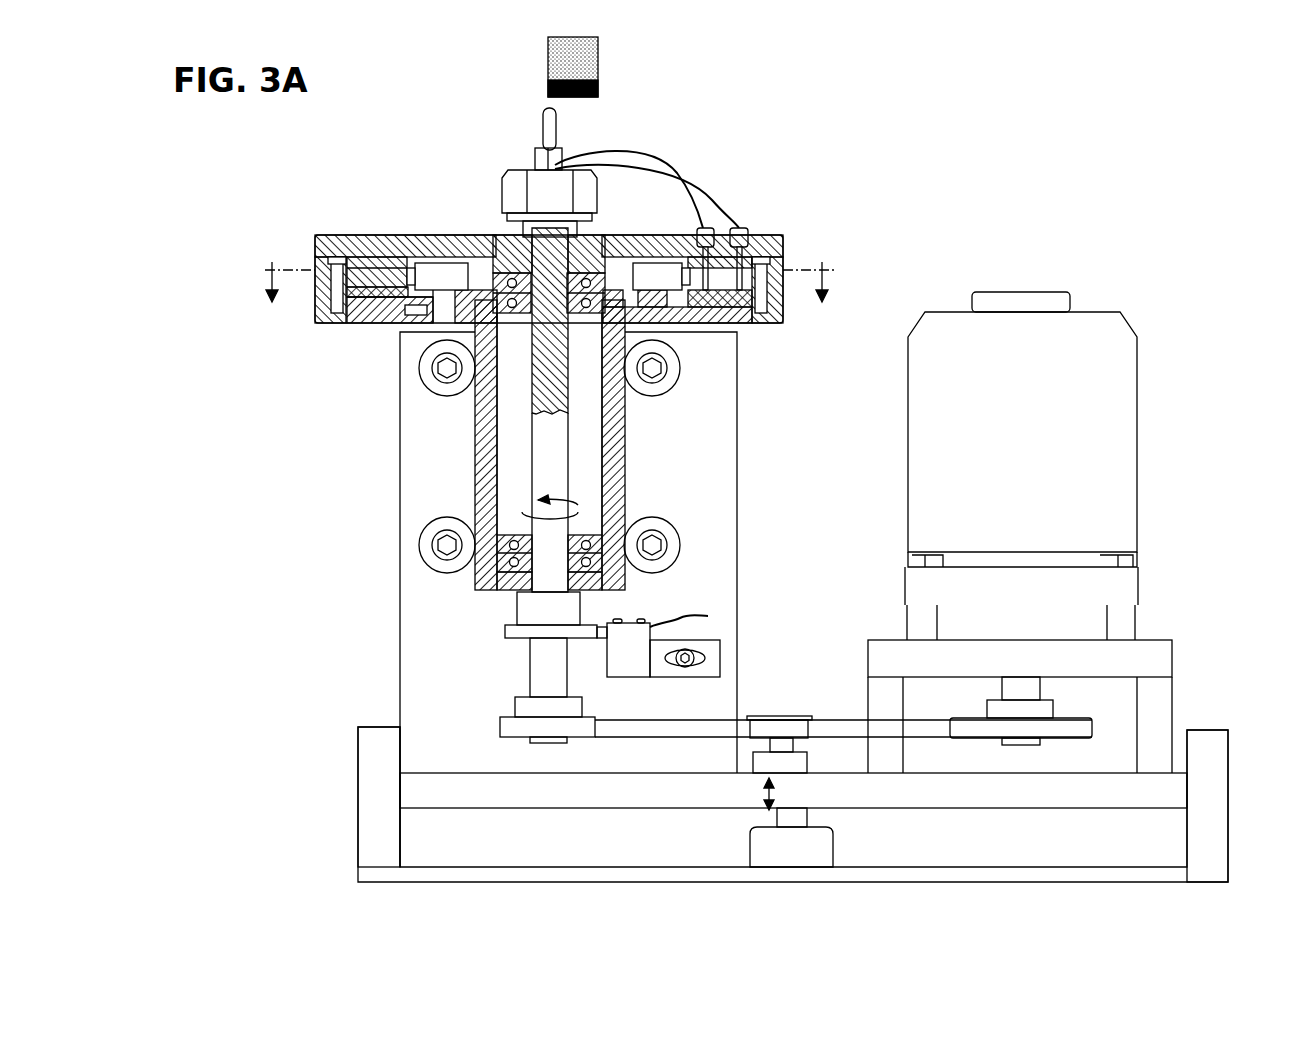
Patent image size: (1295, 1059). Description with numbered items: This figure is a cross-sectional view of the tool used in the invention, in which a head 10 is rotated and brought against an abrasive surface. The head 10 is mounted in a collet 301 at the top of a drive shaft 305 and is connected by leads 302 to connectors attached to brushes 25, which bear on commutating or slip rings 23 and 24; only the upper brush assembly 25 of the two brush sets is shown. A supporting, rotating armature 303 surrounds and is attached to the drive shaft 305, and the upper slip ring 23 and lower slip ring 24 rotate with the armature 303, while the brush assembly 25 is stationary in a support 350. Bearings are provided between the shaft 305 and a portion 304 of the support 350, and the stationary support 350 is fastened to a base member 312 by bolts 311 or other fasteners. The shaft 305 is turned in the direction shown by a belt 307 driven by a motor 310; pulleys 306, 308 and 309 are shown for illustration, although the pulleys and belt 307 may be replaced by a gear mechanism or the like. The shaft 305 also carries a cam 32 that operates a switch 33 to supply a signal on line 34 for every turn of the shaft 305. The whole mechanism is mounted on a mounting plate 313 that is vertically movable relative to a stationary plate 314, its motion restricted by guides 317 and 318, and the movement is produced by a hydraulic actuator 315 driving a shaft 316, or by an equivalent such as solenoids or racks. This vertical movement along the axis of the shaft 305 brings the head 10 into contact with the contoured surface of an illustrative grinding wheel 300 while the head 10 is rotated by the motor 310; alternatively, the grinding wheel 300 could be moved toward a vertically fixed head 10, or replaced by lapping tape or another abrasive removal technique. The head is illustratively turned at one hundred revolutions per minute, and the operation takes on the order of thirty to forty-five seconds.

The grinding wheel 300 is at (600, 87).
The head 10 is at (546, 130).
The collet 301 is at (535, 160).
The leads 302 is at (666, 179).
The rotating armature 303 is at (325, 240).
The upper slip ring 23 is at (390, 272).
The upper brush assembly 25 is at (428, 266).
The lower slip ring 24 is at (388, 323).
The stationary support 350 is at (428, 323).
The portion of the support 304 is at (497, 325).
The drive shaft 305 is at (568, 465).
The bolts 311 is at (438, 388).
The base member 312 is at (738, 413).
The motor 310 is at (1138, 506).
The line 34 is at (677, 615).
The cam 32 is at (507, 640).
The switch 33 is at (642, 635).
The pulley 306 is at (508, 718).
The belt 307 is at (625, 722).
The pulley 308 is at (778, 718).
The pulley 309 is at (1070, 720).
The mounting plate 313 is at (533, 808).
The stationary plate 314 is at (968, 868).
The hydraulic actuator 315 is at (751, 849).
The shaft 316 is at (812, 820).
The guide 317 is at (357, 744).
The guide 318 is at (1230, 748).